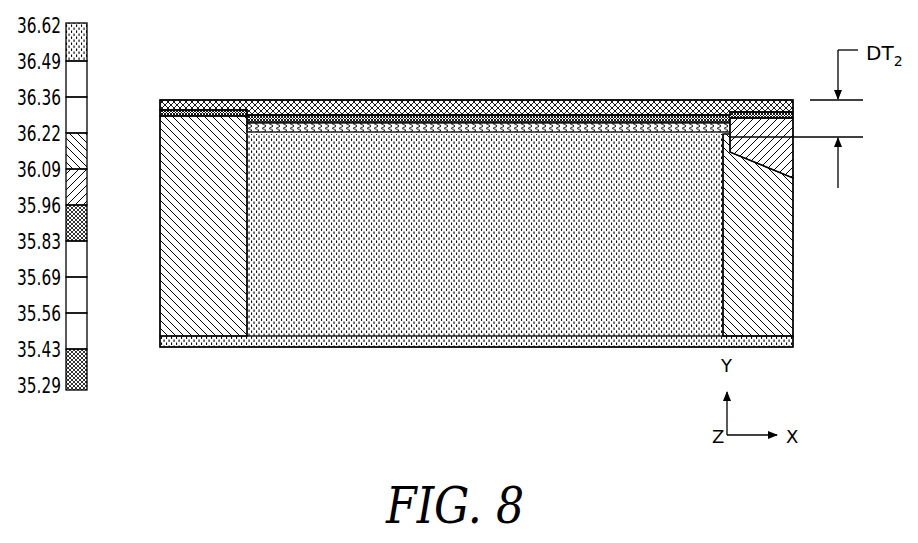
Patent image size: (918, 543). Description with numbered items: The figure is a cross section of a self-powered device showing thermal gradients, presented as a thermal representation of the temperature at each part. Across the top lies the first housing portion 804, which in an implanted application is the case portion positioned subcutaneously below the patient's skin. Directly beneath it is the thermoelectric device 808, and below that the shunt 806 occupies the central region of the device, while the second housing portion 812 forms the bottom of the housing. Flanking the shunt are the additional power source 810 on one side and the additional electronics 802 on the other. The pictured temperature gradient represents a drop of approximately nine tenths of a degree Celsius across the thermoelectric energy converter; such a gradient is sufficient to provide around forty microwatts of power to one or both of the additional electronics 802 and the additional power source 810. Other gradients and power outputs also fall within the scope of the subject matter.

The additional electronics 802 is at (783, 232).
The first housing portion 804 is at (392, 100).
The shunt 806 is at (476, 332).
The thermoelectric device 808 is at (490, 118).
The additional power source 810 is at (180, 216).
The second housing portion 812 is at (368, 348).